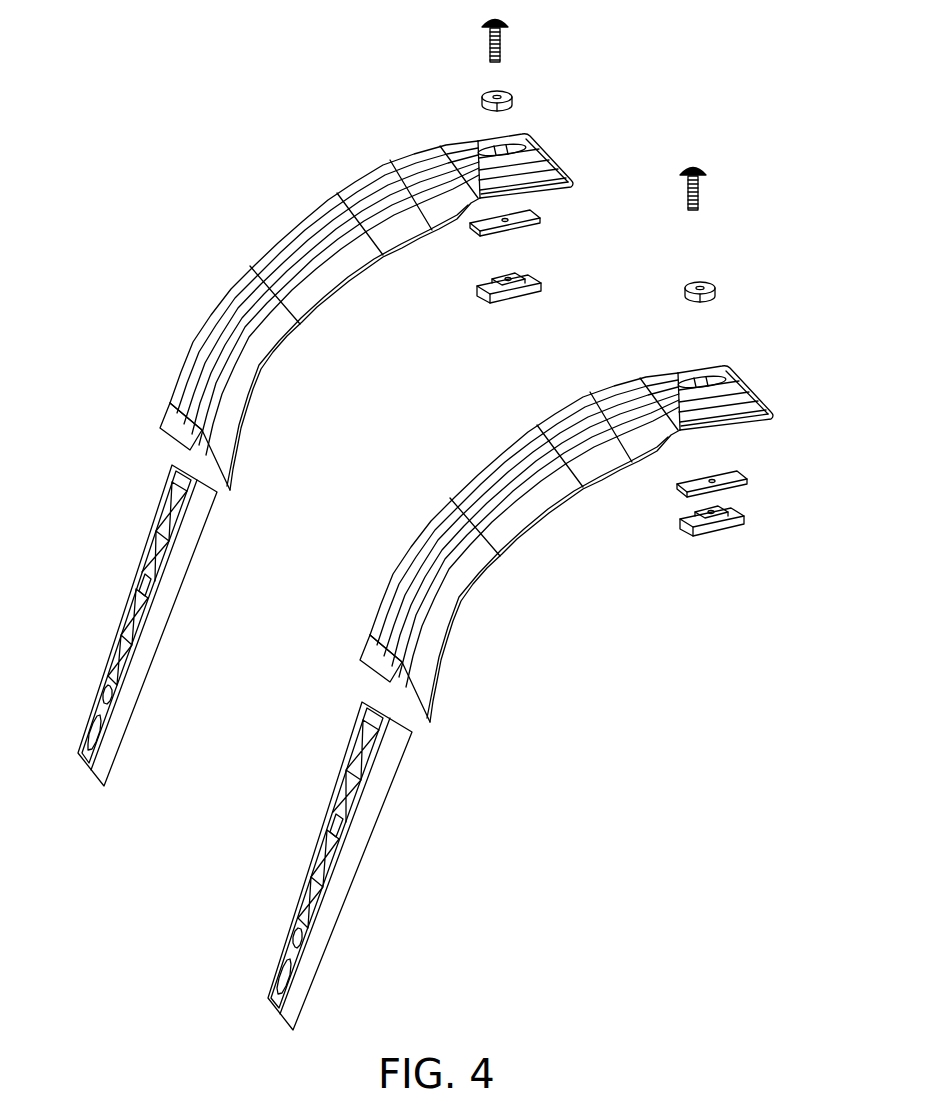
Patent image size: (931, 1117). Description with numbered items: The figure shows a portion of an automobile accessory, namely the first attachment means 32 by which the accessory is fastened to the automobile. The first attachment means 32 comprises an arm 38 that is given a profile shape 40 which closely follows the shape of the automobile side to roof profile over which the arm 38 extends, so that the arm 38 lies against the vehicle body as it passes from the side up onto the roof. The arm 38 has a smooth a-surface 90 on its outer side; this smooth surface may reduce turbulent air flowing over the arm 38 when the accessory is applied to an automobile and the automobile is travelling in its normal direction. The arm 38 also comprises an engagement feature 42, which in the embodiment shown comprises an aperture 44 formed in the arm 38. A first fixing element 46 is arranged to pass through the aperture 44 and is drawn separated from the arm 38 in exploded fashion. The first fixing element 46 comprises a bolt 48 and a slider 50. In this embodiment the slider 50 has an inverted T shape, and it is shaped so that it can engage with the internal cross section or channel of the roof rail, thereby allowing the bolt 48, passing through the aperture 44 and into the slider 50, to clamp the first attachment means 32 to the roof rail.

The first attachment means 32 is at (358, 148).
The a-surface 90 is at (280, 236).
The arm 38 is at (346, 588).
The profile shape 40 is at (538, 544).
The engagement feature 42 is at (720, 368).
The aperture 44 is at (695, 366).
The first fixing element 46 is at (740, 555).
The bolt 48 is at (703, 188).
The slider 50 is at (745, 520).